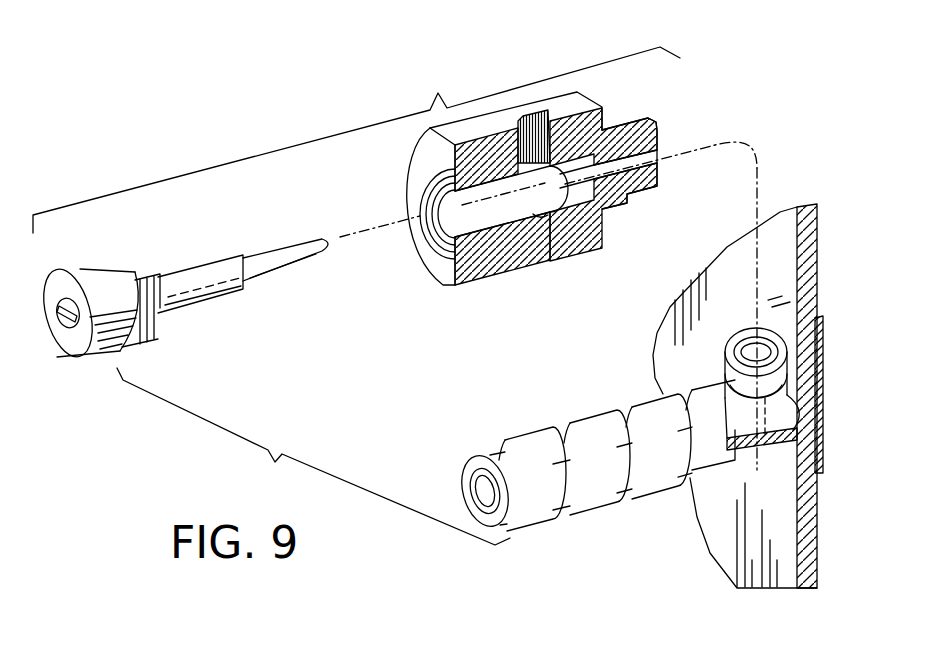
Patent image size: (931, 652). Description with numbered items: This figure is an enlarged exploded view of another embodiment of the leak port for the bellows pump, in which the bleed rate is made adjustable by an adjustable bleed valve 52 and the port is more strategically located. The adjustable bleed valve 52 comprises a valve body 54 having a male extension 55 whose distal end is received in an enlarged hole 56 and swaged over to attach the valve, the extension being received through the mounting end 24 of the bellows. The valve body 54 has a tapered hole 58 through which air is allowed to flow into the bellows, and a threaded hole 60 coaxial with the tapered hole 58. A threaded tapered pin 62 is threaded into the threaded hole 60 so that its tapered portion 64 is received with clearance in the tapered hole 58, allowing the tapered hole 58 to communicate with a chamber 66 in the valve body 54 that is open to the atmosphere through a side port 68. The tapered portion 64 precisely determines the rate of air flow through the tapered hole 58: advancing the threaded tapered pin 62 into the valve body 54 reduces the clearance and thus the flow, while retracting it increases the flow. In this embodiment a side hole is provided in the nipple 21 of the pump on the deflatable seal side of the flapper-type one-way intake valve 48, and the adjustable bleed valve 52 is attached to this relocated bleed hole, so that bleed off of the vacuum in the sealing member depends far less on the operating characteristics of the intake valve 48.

The nipple 21 is at (518, 452).
The mounting end bracket 24 is at (806, 203).
The one-way intake valve 48 is at (825, 347).
The adjustable bleed valve 52 is at (478, 122).
The valve body 54 is at (458, 283).
The male extension 55 is at (647, 130).
The enlarged hole 56 is at (740, 348).
The tapered hole 58 is at (647, 192).
The threaded hole 60 is at (437, 228).
The threaded tapered pin 62 is at (107, 355).
The tapered portion 64 is at (267, 282).
The chamber 66 is at (537, 210).
The side port 68 is at (583, 96).